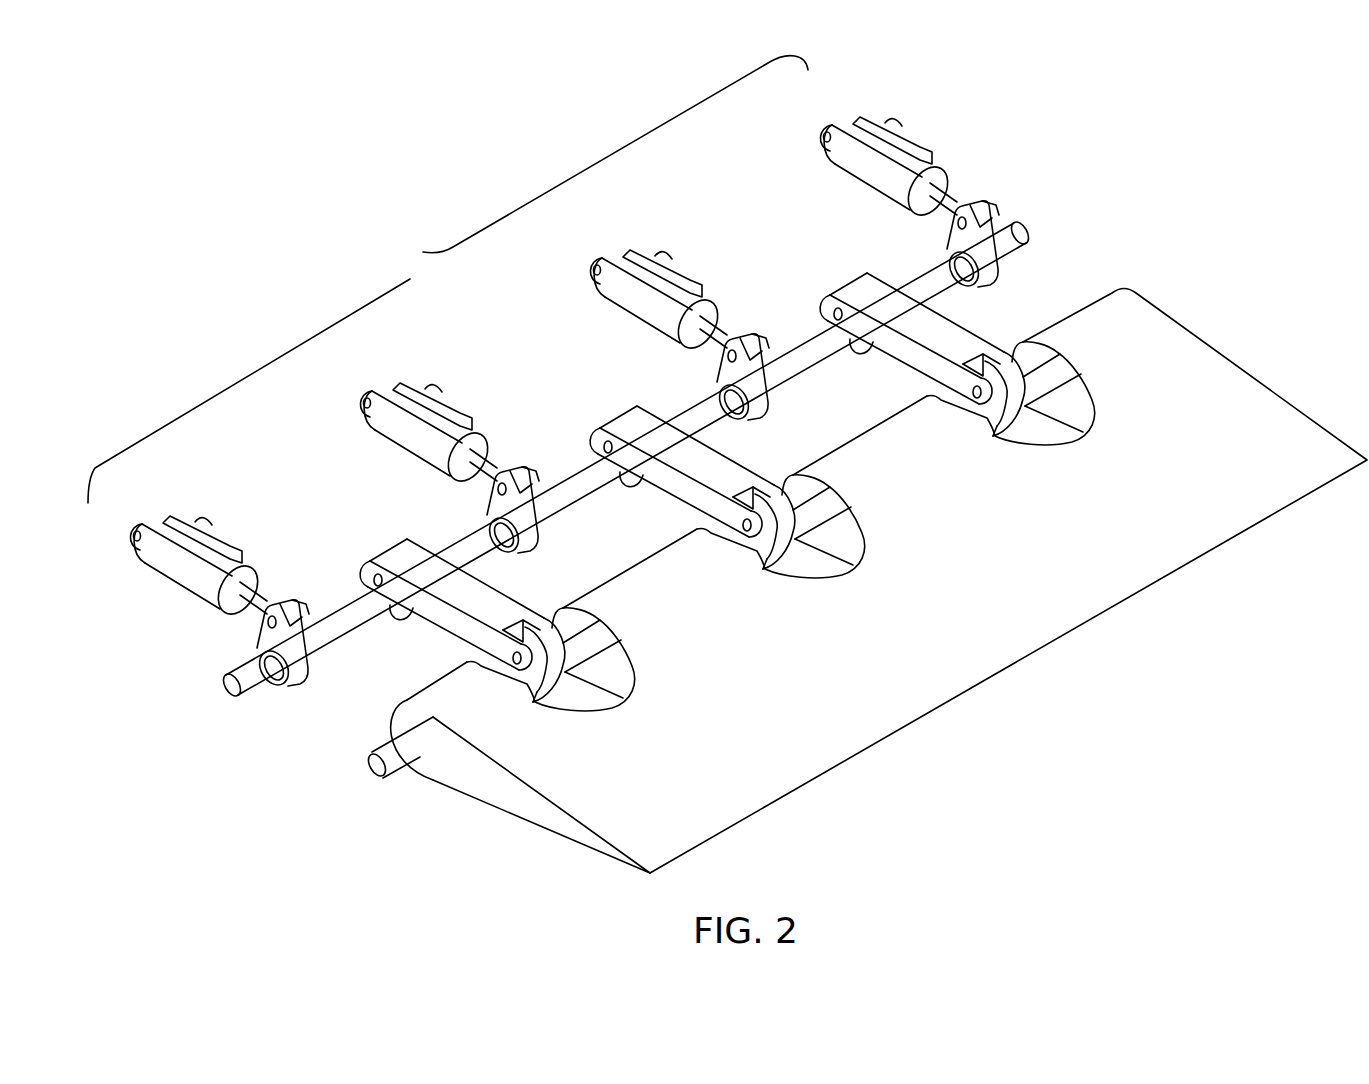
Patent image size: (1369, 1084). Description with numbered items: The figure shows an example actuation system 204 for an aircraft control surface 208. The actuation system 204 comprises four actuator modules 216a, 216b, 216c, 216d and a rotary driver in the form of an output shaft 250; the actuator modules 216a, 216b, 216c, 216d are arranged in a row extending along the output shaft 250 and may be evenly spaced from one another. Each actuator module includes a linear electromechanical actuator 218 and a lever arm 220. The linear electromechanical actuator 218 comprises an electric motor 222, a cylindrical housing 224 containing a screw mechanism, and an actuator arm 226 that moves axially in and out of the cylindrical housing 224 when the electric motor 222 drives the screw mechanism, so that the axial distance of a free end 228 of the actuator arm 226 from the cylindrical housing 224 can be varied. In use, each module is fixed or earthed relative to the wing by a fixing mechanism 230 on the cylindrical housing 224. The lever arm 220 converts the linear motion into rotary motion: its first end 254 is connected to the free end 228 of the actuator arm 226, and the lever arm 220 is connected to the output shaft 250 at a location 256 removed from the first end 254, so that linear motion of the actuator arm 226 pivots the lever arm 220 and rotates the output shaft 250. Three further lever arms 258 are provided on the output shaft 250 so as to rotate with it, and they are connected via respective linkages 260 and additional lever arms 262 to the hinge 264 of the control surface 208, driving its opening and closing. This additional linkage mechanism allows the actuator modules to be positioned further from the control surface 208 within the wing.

The actuation system 204 is at (410, 279).
The control surface 208 is at (782, 798).
The actuator module 216a is at (149, 568).
The actuator module 216b is at (397, 449).
The actuator module 216c is at (613, 305).
The actuator module 216d is at (888, 163).
The linear electromechanical actuator 218 is at (133, 545).
The lever arm 220 is at (258, 630).
The electric motor 222 is at (903, 125).
The cylindrical housing 224 is at (865, 195).
The actuator arm 226 is at (947, 200).
The free end 228 is at (943, 217).
The fixing mechanism 230 is at (592, 268).
The output shaft 250 is at (250, 697).
The first end 254 is at (950, 236).
The location 256 is at (997, 278).
The further lever arm 258 is at (627, 490).
The linkage 260 is at (433, 628).
The additional lever arm 262 is at (553, 690).
The hinge 264 is at (375, 780).